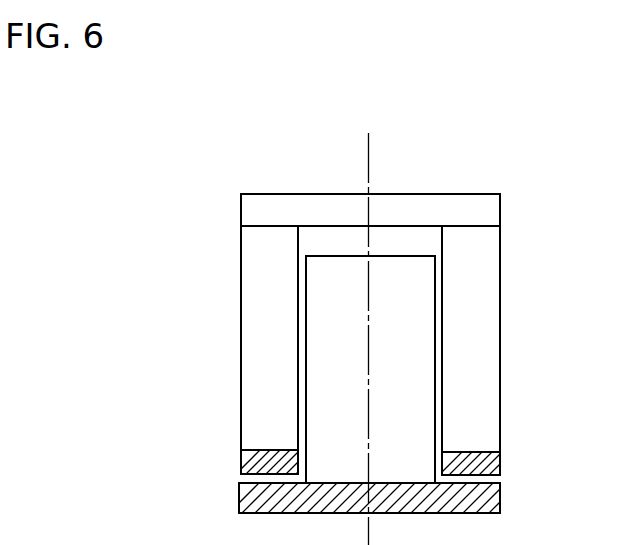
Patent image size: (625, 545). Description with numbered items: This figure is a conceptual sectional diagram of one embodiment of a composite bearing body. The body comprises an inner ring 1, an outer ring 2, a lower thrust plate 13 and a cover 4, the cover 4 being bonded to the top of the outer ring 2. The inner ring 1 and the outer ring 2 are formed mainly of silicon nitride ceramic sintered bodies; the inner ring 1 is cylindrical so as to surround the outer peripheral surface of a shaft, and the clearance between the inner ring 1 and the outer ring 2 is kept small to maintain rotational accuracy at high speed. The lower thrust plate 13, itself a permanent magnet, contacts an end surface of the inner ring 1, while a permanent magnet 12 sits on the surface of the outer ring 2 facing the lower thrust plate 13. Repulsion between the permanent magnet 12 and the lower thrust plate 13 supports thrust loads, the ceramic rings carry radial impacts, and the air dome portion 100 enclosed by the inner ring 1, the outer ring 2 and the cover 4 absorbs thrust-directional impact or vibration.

The air dome portion 100 is at (342, 245).
The inner ring 1 is at (396, 270).
The outer ring 2 is at (475, 303).
The cover 4 is at (480, 210).
The permanent magnet 12 is at (478, 450).
The lower thrust plate 13 is at (500, 495).